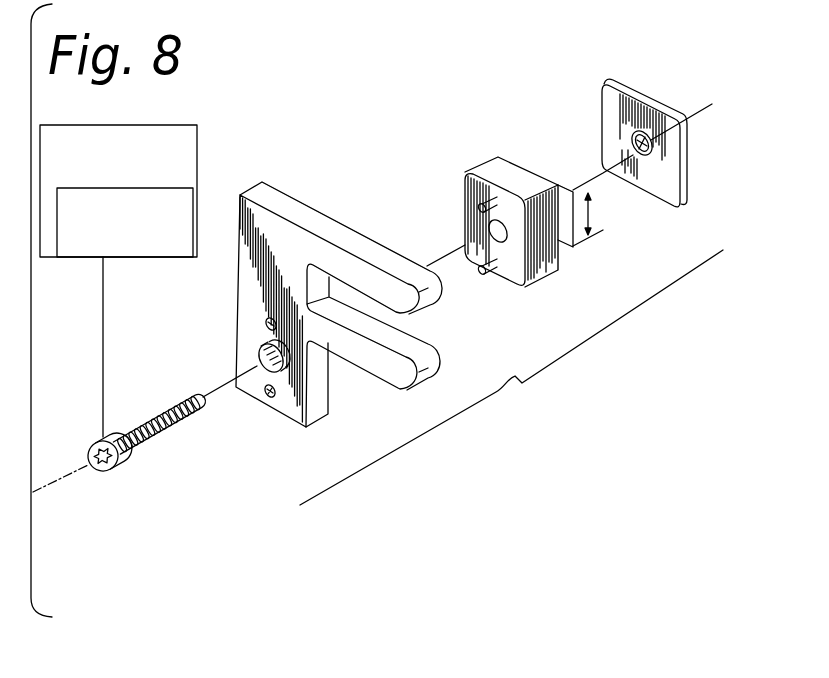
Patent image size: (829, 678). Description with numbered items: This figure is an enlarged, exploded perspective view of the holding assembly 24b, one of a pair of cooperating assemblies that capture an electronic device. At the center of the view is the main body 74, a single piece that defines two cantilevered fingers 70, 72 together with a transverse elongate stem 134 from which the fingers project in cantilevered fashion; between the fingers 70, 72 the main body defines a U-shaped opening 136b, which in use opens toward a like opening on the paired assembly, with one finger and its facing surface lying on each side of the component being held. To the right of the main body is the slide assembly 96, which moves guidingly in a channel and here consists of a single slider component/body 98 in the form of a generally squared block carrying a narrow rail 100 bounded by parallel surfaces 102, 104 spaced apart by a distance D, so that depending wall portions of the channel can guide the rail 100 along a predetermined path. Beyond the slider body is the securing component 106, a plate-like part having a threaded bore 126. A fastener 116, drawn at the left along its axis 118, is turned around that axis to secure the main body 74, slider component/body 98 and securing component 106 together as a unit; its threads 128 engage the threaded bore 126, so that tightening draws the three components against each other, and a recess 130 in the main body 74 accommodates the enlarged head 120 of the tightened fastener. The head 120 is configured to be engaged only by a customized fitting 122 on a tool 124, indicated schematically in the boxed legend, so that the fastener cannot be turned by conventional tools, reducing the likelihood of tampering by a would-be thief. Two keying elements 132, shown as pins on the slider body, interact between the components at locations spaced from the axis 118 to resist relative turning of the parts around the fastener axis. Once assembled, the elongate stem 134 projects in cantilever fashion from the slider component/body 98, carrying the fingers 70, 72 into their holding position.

The holding assembly 24b is at (511, 377).
The cantilevered finger 70 is at (379, 372).
The cantilevered finger 72 is at (338, 248).
The main body 74 is at (346, 317).
The slide assembly 96 is at (532, 183).
The slider component/body 98 is at (550, 254).
The rail 100 is at (562, 188).
The surface 102 is at (570, 202).
The surface 104 is at (573, 262).
The securing component 106 is at (645, 143).
The fastener 116 is at (160, 423).
The axis 118 is at (73, 468).
The head 120 is at (147, 458).
The fitting 122 is at (110, 247).
The tool 124 is at (110, 178).
The threaded bore 126 is at (633, 131).
The threads 128 is at (172, 470).
The recess 130 is at (243, 393).
The keying elements 132 is at (485, 198).
The elongate stem 134 is at (291, 472).
The U-shaped opening 136b is at (388, 335).